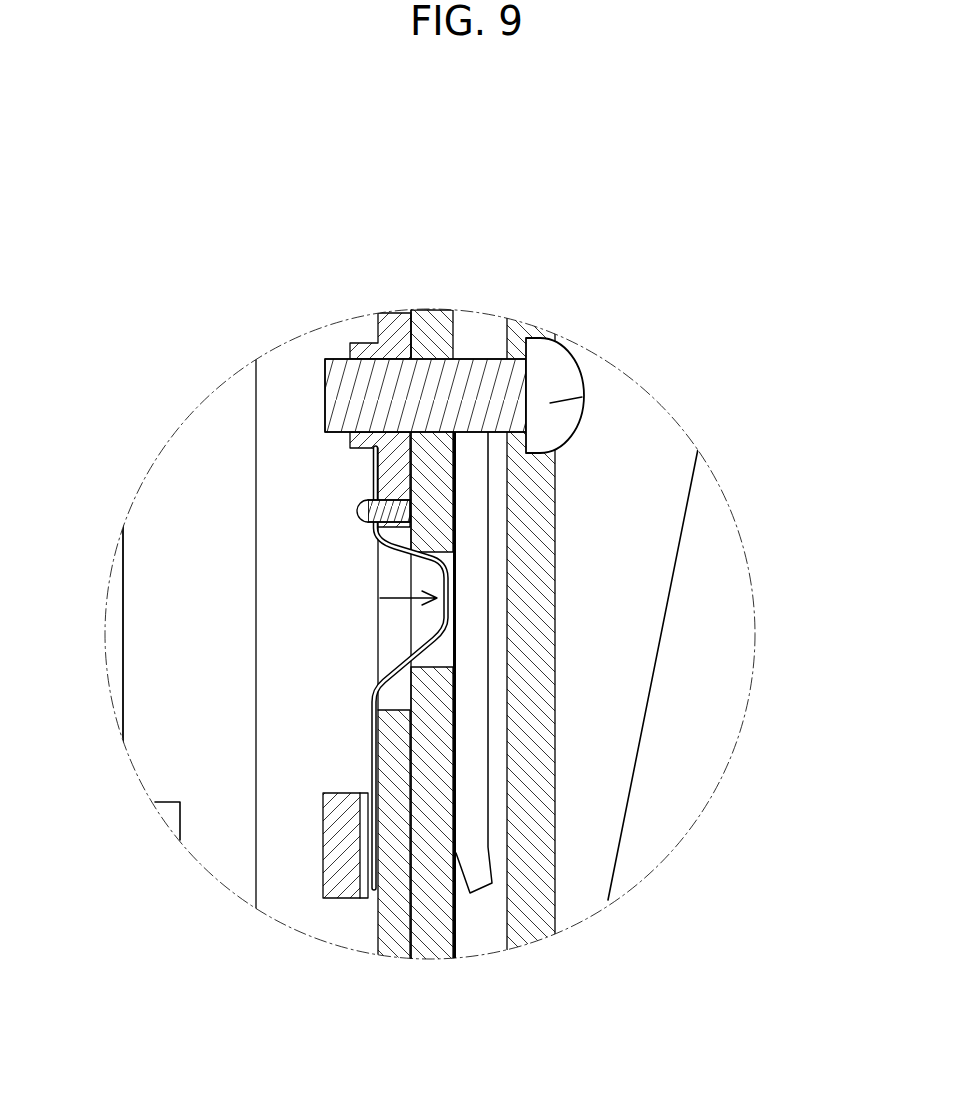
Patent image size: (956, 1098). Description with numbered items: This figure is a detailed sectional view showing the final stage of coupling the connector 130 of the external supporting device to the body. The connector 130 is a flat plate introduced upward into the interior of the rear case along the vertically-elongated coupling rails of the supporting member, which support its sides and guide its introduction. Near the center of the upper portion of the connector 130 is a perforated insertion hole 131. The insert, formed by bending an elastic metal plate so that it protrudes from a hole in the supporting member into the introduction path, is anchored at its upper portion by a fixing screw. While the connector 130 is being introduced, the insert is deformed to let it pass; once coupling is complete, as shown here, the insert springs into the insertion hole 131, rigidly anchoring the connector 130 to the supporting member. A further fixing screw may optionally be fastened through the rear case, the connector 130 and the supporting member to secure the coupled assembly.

The connector 130 is at (445, 925).
The insertion hole 131 is at (455, 653).